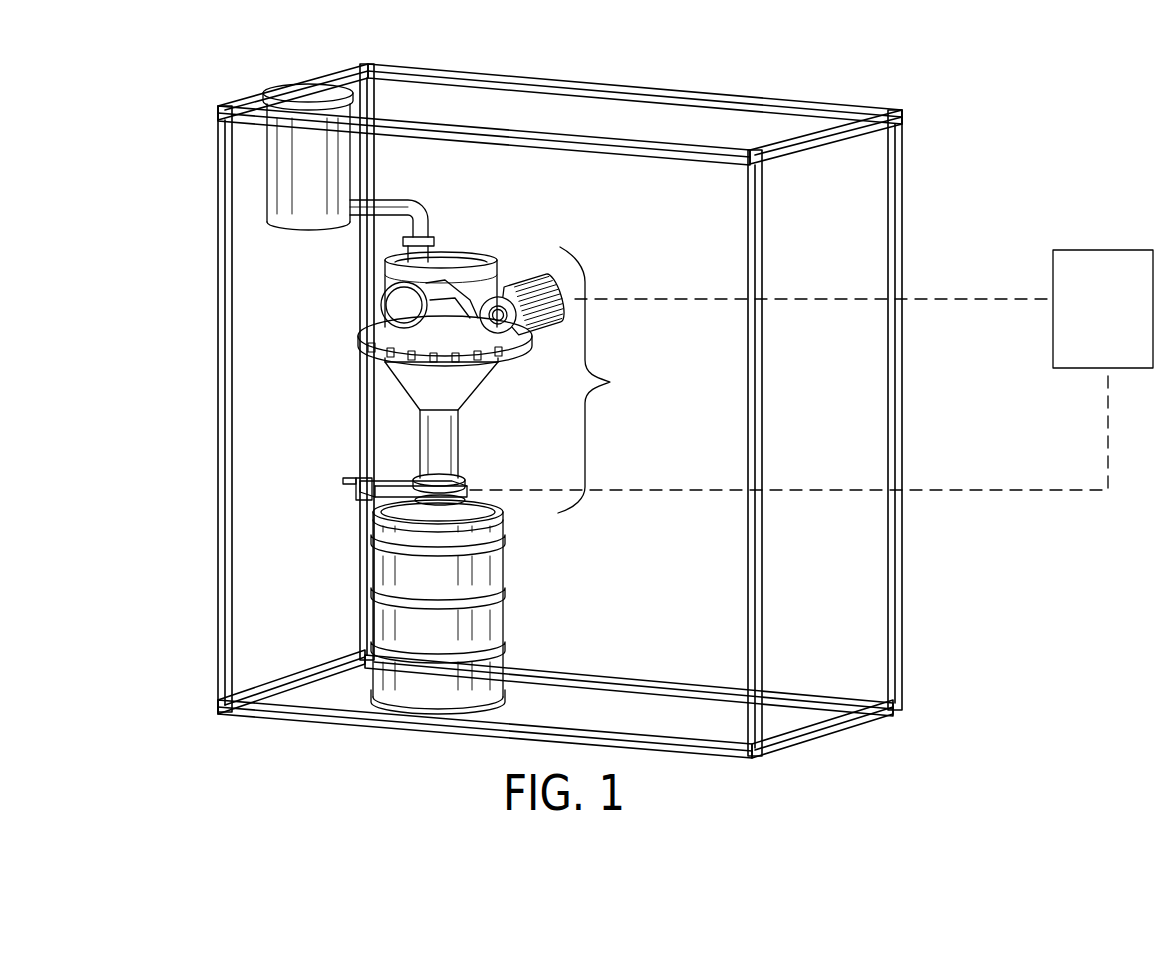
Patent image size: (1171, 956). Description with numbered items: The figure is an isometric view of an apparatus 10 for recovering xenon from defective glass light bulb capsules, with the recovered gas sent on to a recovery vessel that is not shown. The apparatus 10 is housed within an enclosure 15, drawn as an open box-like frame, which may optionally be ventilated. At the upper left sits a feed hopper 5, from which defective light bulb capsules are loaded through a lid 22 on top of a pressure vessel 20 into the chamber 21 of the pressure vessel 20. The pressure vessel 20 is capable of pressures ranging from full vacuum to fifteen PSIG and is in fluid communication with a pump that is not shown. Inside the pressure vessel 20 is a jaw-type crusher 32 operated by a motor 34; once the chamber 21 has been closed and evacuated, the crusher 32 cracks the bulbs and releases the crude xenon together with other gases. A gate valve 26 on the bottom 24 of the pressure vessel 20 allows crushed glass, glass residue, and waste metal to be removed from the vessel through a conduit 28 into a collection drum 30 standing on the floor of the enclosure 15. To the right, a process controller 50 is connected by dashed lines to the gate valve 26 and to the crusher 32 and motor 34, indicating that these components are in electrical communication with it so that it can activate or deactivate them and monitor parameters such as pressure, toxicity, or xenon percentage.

The apparatus 10 is at (980, 100).
The enclosure 15 is at (905, 370).
The feed hopper 5 is at (288, 185).
The pressure vessel 20 is at (602, 380).
The chamber 21 is at (438, 292).
The lid 22 is at (478, 250).
The crusher 32 is at (438, 313).
The motor 34 is at (528, 330).
The bottom 24 is at (413, 397).
The conduit 28 is at (446, 455).
The gate valve 26 is at (352, 493).
The collection drum 30 is at (502, 618).
The process controller 50 is at (811, 370).